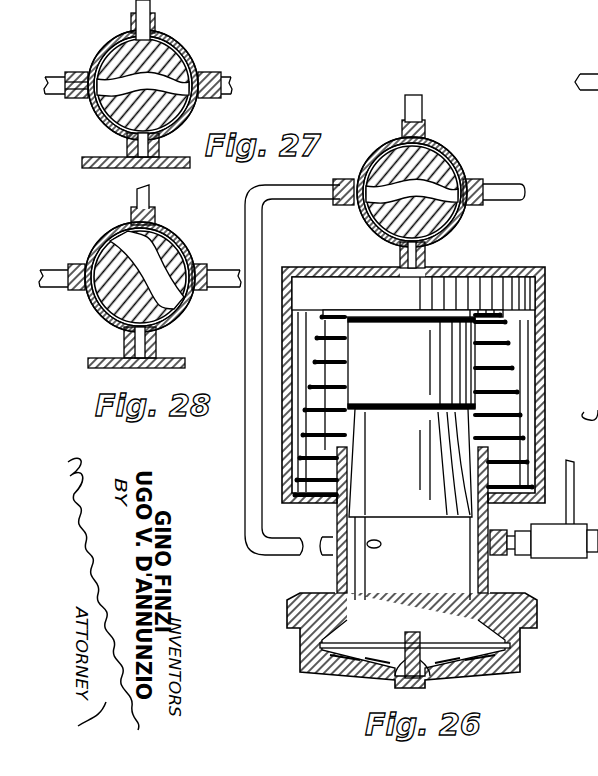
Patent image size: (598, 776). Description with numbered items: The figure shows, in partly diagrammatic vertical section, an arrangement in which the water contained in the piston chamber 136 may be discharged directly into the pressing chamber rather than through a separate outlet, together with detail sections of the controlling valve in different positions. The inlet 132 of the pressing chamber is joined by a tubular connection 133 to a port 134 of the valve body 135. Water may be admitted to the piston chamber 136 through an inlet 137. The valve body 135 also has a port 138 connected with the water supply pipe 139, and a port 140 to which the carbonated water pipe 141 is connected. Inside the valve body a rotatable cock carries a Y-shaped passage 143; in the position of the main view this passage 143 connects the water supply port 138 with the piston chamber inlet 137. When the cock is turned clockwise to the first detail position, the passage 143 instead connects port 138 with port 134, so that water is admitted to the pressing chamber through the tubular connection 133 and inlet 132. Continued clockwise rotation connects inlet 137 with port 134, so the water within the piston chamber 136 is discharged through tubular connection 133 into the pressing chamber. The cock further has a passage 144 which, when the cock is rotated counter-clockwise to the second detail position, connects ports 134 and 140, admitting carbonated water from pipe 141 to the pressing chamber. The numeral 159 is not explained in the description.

In FIG. 26, the inlet 132 is at (366, 548).
In FIG. 26, the tubular connection 133 is at (246, 215).
In FIG. 26, the port 134 is at (333, 180).
In FIG. 27, the valve body 135 is at (143, 85).
In FIG. 26, the valve body 135 is at (440, 187).
In FIG. 27, the piston chamber 136 is at (67, 66).
In FIG. 26, the piston chamber 136 is at (586, 66).
In FIG. 26, the inlet 137 is at (442, 255).
In FIG. 27, the port 138 is at (222, 74).
In FIG. 26, the port 138 is at (498, 178).
In FIG. 26, the water supply pipe 139 is at (525, 194).
In FIG. 26, the port 140 is at (456, 108).
In FIG. 26, the carbonated water pipe 141 is at (434, 95).
In FIG. 27, the Y-shaped passage 143 is at (169, 85).
In FIG. 26, the Y-shaped passage 143 is at (436, 192).
In FIG. 28, the passage 144 is at (123, 270).
In FIG. 26, the passage 144 is at (404, 164).
In FIG. 26, the pipe 159 is at (588, 378).